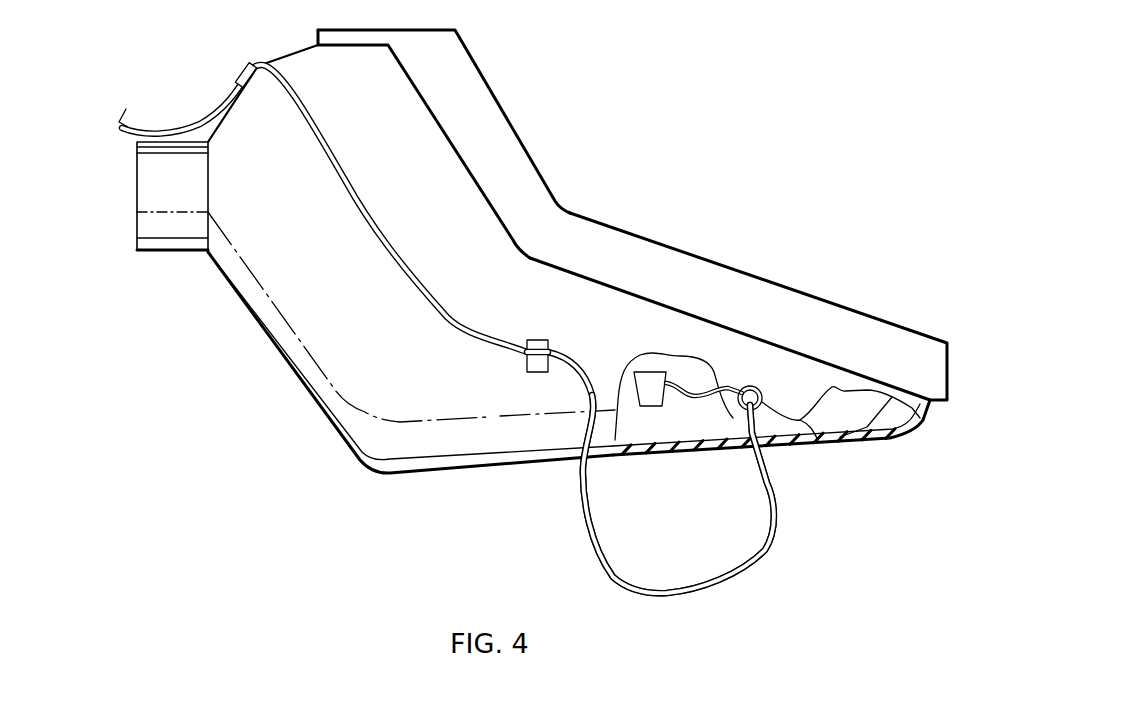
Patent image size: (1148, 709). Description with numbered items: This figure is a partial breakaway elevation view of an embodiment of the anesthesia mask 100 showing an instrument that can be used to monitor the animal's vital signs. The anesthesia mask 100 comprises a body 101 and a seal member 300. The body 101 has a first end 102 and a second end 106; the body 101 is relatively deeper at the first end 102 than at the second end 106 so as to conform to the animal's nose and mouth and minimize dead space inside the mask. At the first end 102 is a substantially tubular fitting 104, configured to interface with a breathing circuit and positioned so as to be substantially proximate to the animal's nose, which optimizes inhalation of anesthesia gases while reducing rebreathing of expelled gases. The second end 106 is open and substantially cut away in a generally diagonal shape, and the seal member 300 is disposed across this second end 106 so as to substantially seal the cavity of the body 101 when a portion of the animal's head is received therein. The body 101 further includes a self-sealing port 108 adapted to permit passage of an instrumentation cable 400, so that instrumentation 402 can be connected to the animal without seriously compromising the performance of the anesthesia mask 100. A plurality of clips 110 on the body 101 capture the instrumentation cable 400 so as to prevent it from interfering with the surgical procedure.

The anesthesia mask 100 is at (520, 307).
The body 101 is at (370, 470).
The first end 102 is at (200, 340).
The fitting 104 is at (180, 235).
The second end 106 is at (520, 480).
The self-sealing port 108 is at (765, 402).
The clip 110 is at (236, 73).
The seal member 300 is at (693, 250).
The instrumentation cable 400 is at (760, 563).
The instrumentation 402 is at (648, 377).